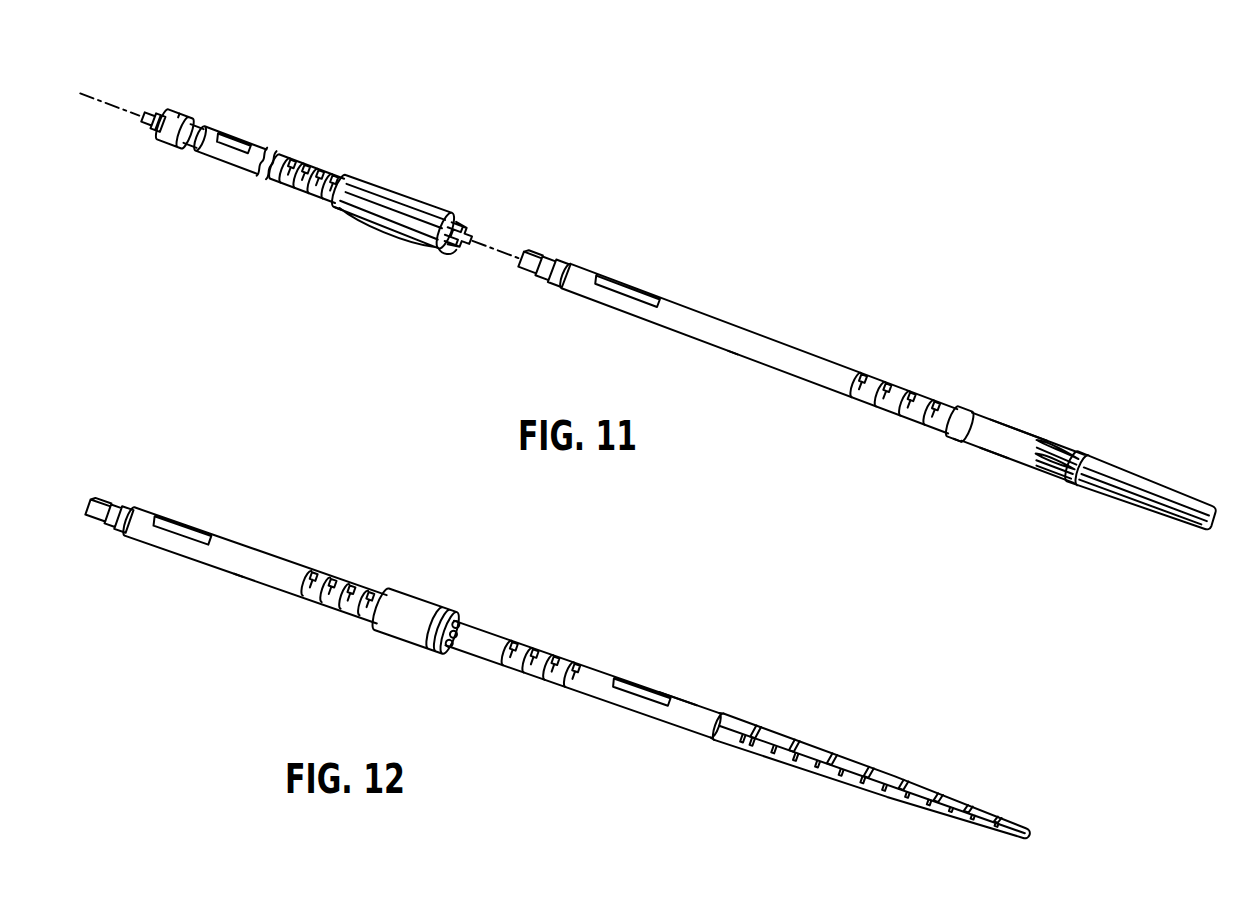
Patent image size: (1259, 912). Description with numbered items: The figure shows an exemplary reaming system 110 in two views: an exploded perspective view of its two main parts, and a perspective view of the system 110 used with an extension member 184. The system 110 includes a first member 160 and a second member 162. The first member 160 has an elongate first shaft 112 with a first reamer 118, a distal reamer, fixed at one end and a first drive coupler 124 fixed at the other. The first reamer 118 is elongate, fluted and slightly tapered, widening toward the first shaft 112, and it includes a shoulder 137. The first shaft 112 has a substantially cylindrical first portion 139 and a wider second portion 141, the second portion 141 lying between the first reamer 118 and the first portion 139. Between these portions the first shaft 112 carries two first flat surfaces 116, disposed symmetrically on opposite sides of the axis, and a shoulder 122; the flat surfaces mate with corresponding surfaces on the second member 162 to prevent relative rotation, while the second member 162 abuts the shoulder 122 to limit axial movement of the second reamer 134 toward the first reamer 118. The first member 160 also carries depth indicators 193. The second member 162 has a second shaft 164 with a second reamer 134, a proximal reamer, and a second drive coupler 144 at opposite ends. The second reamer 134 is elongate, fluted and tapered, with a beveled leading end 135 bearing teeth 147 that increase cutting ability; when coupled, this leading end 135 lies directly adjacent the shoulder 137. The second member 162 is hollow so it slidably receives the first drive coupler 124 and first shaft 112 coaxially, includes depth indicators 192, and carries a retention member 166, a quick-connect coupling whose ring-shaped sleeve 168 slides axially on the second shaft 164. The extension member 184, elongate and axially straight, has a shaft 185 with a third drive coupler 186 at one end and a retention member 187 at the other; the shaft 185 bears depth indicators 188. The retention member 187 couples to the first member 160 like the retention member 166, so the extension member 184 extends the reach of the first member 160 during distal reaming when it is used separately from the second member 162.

In FIG. 11, the system 110 is at (1084, 300).
In FIG. 12, the system 110 is at (683, 641).
In FIG. 11, the first shaft 112 is at (780, 350).
In FIG. 12, the first shaft 112 is at (602, 673).
In FIG. 11, the first flat surfaces 116 is at (964, 404).
In FIG. 11, the first reamer 118 is at (1130, 472).
In FIG. 12, the first reamer 118 is at (937, 808).
In FIG. 11, the shoulder 122 is at (962, 442).
In FIG. 11, the first drive coupler 124 is at (537, 258).
In FIG. 11, the second reamer 134 is at (378, 190).
In FIG. 11, the leading end 135 is at (468, 235).
In FIG. 11, the shoulder 137 is at (1085, 455).
In FIG. 11, the first portion 139 is at (738, 350).
In FIG. 11, the second portion 141 is at (1003, 452).
In FIG. 11, the second drive coupler 144 is at (152, 110).
In FIG. 11, the teeth 147 is at (455, 262).
In FIG. 11, the first member 160 is at (1010, 414).
In FIG. 12, the first member 160 is at (857, 754).
In FIG. 11, the second member 162 is at (345, 223).
In FIG. 11, the second shaft 164 is at (262, 138).
In FIG. 11, the retention member 166 is at (175, 152).
In FIG. 11, the sleeve 168 is at (193, 125).
In FIG. 12, the extension member 184 is at (244, 577).
In FIG. 12, the shaft 185 is at (237, 553).
In FIG. 12, the third drive coupler 186 is at (95, 520).
In FIG. 12, the retention member 187 is at (403, 612).
In FIG. 12, the depth indicators 188 is at (290, 597).
In FIG. 11, the depth indicators 192 is at (333, 217).
In FIG. 11, the depth indicators 193 is at (947, 398).
In FIG. 12, the depth indicators 193 is at (500, 672).